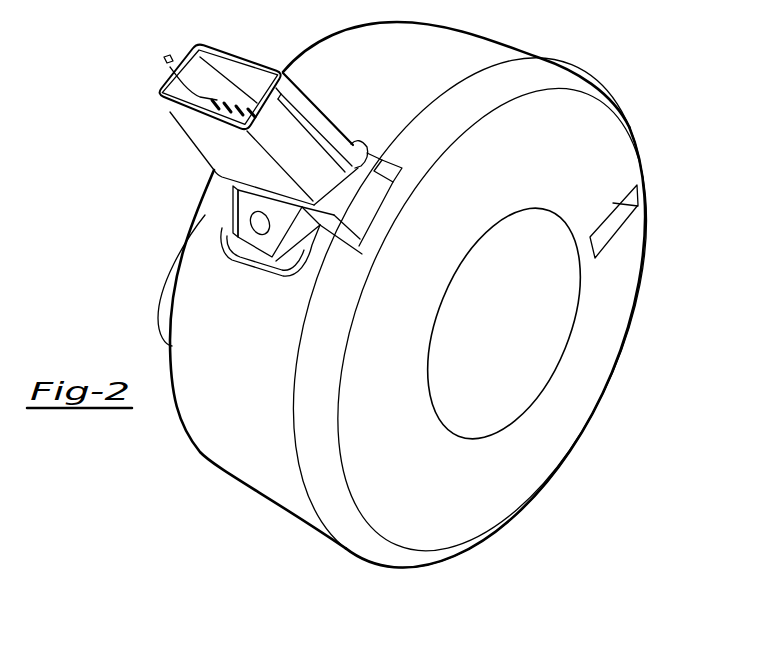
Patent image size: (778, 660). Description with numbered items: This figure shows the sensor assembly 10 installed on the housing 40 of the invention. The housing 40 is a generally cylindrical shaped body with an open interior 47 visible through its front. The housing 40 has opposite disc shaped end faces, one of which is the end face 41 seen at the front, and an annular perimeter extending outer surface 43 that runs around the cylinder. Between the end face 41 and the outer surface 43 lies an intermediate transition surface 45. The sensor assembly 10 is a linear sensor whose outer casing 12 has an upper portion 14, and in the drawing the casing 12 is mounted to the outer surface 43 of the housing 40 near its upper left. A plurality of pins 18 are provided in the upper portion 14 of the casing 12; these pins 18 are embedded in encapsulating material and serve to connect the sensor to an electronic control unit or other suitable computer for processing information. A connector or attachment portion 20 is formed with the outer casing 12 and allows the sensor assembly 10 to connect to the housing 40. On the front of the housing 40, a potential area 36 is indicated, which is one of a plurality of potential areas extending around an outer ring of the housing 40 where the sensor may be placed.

The sensor assembly 10 is at (135, 86).
The outer casing 12 is at (205, 153).
The upper portion 14 is at (187, 126).
The pins 18 is at (168, 57).
The connector or attachment portion 20 is at (230, 229).
The potential area 36 is at (612, 222).
The housing 40 is at (462, 505).
The end face 41 is at (390, 413).
The outer surface 43 is at (239, 393).
The intermediate transition surface 45 is at (323, 457).
The open interior 47 is at (549, 298).